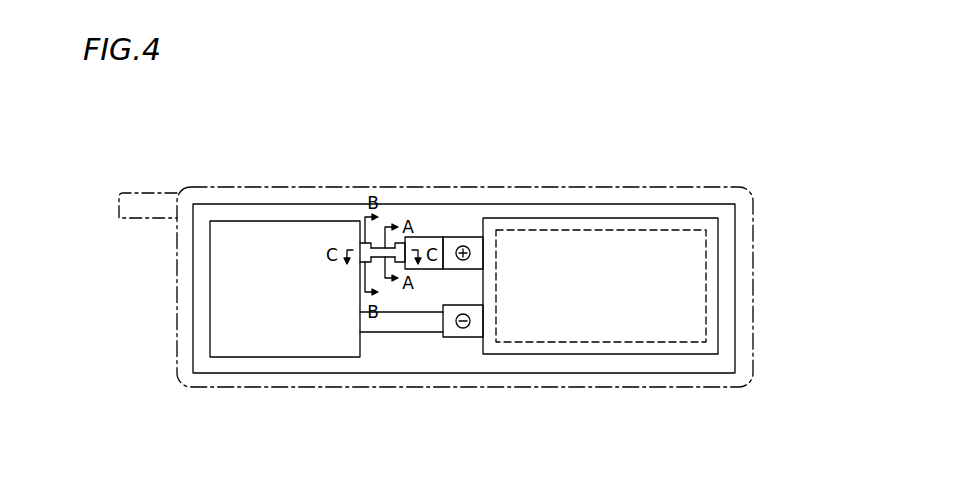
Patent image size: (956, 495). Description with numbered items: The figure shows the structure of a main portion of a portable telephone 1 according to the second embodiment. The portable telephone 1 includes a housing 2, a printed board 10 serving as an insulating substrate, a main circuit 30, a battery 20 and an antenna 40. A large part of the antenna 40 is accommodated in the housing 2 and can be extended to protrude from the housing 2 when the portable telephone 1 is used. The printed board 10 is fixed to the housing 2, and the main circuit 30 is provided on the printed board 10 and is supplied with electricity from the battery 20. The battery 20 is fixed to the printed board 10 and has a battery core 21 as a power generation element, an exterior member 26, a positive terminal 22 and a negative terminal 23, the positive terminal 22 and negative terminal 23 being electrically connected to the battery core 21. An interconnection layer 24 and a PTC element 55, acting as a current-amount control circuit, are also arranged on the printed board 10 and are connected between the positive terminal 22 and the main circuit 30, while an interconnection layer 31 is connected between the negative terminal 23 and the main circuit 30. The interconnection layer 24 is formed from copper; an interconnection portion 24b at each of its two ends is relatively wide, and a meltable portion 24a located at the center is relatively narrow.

The portable telephone 1 is at (757, 97).
The housing 2 is at (201, 187).
The printed board 10 is at (246, 204).
The battery 20 is at (627, 354).
The battery core 21 is at (540, 230).
The positive terminal 22 is at (467, 237).
The negative terminal 23 is at (465, 337).
The interconnection layer 24 is at (327, 137).
The meltable portion 24a is at (377, 247).
The interconnection portion 24b is at (360, 243).
The exterior member 26 is at (670, 218).
The main circuit 30 is at (287, 221).
The interconnection layer 31 is at (377, 332).
The antenna 40 is at (150, 193).
The PTC element 55 is at (428, 270).